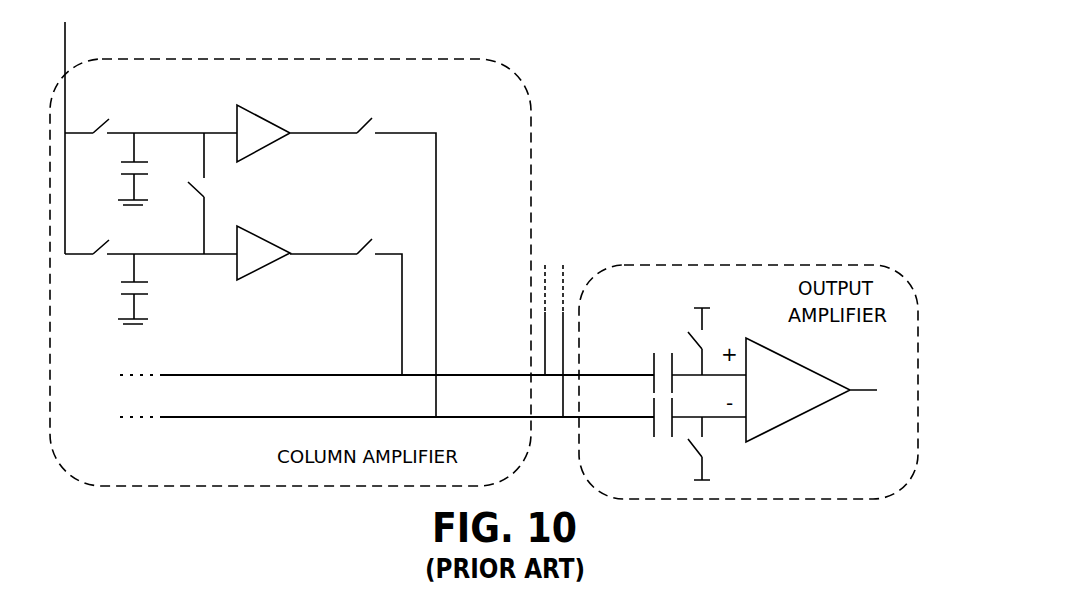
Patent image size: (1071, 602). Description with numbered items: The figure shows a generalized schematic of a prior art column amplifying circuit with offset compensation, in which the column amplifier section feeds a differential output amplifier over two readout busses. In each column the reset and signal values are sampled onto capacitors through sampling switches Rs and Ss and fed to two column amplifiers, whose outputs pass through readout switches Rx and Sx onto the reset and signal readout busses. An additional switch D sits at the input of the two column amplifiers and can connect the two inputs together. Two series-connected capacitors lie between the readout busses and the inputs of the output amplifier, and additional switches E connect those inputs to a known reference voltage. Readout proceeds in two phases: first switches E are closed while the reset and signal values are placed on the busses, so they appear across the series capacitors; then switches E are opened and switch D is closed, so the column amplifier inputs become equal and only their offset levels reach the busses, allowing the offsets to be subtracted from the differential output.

The reset level sample switch Rs is at (151, 114).
The signal level sample switch Ss is at (151, 233).
The switch D is at (186, 193).
The reset column readout switch Rx is at (394, 255).
The signal column readout switch Sx is at (379, 294).
The switches E is at (703, 394).